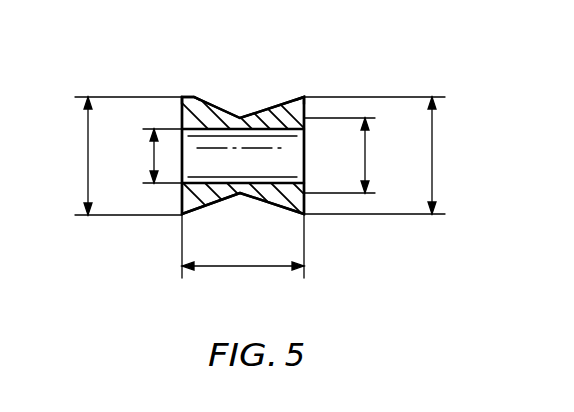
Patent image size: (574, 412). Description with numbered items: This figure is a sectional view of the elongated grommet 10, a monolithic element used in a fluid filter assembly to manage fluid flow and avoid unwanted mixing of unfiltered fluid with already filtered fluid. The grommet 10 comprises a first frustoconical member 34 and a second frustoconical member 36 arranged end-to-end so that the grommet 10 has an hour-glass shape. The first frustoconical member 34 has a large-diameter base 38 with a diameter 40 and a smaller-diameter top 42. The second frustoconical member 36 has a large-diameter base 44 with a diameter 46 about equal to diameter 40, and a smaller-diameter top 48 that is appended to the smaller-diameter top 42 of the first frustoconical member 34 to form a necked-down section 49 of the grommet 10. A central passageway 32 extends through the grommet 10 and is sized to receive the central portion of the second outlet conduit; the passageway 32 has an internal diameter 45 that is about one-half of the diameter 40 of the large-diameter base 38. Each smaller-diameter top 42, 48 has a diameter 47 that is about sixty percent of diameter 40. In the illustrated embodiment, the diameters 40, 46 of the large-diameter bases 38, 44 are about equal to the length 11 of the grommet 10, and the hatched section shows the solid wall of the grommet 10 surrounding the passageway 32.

The elongated grommet 10 is at (272, 47).
The length 11 is at (243, 268).
The passageway 32 is at (286, 183).
The first frustoconical member 34 is at (182, 93).
The second frustoconical member 36 is at (302, 94).
The large-diameter base 38 is at (181, 110).
The diameter 40 is at (88, 158).
The smaller-diameter top 42 is at (231, 196).
The large-diameter base 44 is at (306, 214).
The internal diameter 45 is at (154, 157).
The diameter 46 is at (434, 154).
The diameter 47 is at (367, 154).
The smaller-diameter top 48 is at (253, 198).
The necked-down section 49 is at (241, 113).